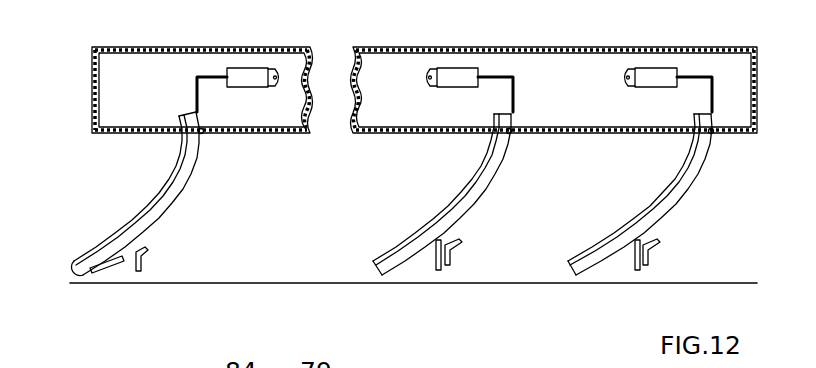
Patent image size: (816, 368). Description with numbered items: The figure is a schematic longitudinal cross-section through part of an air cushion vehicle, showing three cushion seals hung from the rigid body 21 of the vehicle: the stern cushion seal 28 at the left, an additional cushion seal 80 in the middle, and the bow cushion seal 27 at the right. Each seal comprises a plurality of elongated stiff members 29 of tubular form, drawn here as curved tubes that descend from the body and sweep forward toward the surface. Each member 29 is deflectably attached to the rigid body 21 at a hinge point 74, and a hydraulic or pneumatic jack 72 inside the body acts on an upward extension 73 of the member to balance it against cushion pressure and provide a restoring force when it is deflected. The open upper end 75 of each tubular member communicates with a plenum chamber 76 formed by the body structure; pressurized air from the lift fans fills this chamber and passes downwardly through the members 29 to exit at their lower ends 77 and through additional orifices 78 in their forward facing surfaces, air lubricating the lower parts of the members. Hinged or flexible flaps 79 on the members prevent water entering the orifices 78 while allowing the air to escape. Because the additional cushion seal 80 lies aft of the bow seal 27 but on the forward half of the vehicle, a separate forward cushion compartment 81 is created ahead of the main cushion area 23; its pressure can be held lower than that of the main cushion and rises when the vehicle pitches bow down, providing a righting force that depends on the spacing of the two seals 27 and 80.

The rigid body 21 is at (132, 47).
The jacks 72 is at (250, 78).
The upward extensions 73 is at (197, 90).
The hinge points 74 is at (203, 134).
The open upper ends 75 is at (188, 112).
The plenum chamber 76 is at (299, 119).
The stern cushion seal 28 is at (247, 197).
The additional cushion seal 80 is at (560, 197).
The bow cushion seal 27 is at (750, 197).
The elongated stiff members 29 is at (160, 208).
The lower ends 77 is at (88, 276).
The additional orifices 78 is at (123, 259).
The flaps 79 is at (146, 253).
The main cushion area 23 is at (292, 249).
The cushion compartment 81 is at (527, 250).